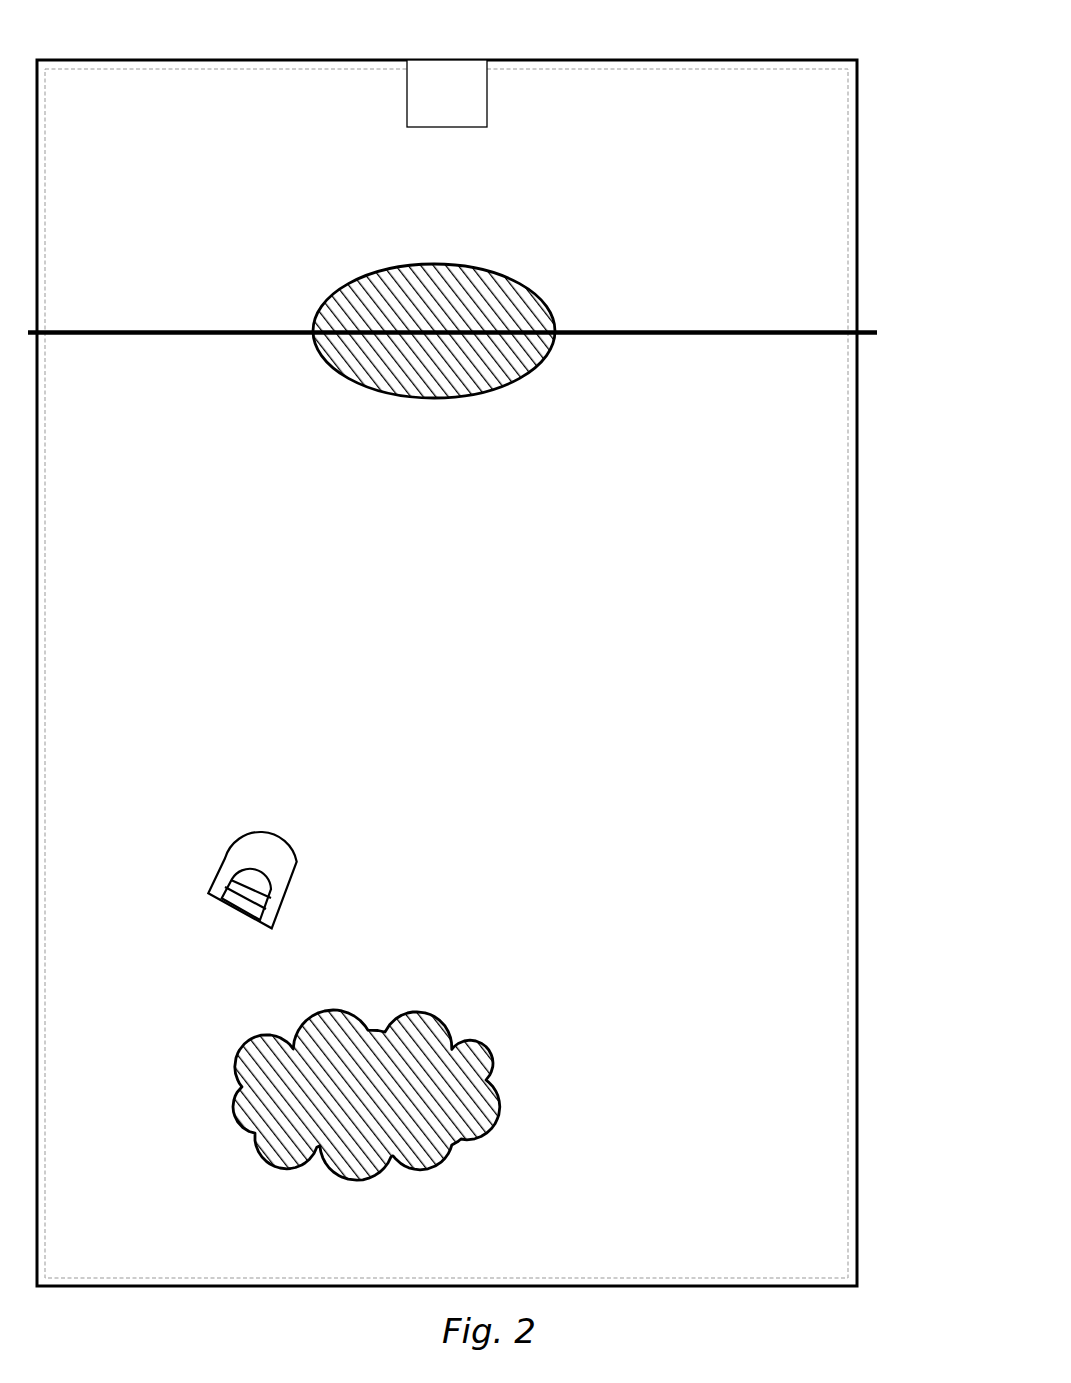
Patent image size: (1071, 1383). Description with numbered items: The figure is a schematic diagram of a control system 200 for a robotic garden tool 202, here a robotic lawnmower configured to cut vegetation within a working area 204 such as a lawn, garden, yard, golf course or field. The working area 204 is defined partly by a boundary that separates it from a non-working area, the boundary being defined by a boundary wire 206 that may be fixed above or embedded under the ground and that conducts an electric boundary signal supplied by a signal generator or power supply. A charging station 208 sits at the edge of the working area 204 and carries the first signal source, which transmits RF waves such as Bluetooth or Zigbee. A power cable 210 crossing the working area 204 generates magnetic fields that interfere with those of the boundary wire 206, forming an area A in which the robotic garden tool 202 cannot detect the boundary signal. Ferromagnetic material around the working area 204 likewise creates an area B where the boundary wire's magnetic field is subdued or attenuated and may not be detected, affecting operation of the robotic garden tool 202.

The control system 200 is at (462, 646).
The robotic garden tool 202 is at (290, 902).
The working area 204 is at (780, 727).
The boundary wire 206 is at (848, 673).
The charging station 208 is at (447, 128).
The power cable 210 is at (602, 330).
The area A is at (482, 397).
The area B is at (477, 1041).